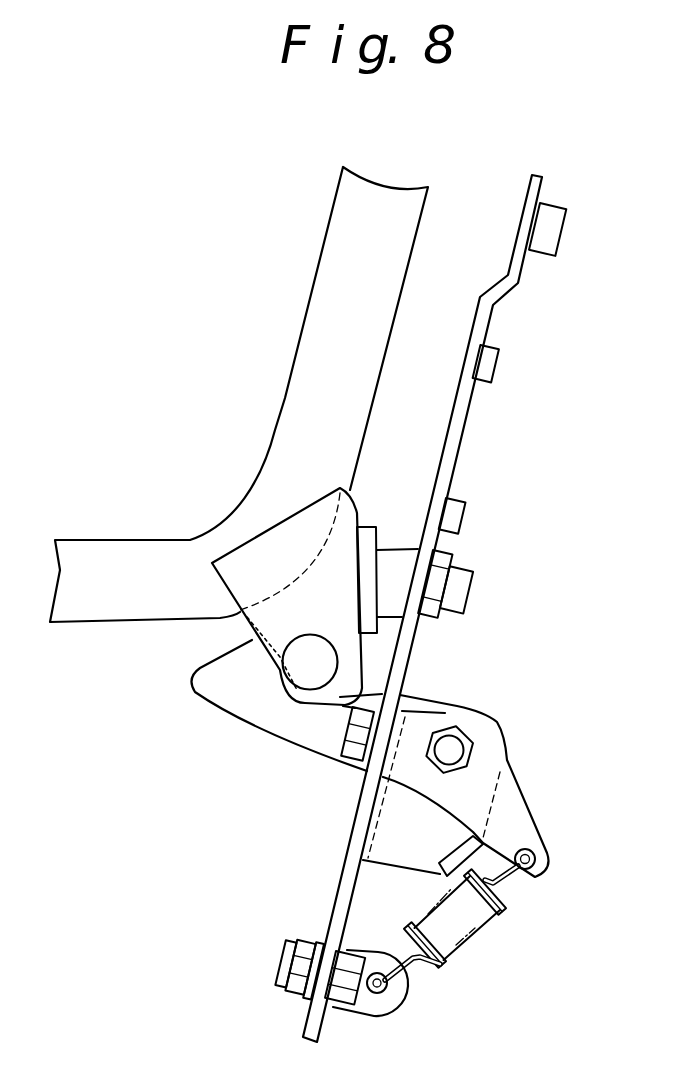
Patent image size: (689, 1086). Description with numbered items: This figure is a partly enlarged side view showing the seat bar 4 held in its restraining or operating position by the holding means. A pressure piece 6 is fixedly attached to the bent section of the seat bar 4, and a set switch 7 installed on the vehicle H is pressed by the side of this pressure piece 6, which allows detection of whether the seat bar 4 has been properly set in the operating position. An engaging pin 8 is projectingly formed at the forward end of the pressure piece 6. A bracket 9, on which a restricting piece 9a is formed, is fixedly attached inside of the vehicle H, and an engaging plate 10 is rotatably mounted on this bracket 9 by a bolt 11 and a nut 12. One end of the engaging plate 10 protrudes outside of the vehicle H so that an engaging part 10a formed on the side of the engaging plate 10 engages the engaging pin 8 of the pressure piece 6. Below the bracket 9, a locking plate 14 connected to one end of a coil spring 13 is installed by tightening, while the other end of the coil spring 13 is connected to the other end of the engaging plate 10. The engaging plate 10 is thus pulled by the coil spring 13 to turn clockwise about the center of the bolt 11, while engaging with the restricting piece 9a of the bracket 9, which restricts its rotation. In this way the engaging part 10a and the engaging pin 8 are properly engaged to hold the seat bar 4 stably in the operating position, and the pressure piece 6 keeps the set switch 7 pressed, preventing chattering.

The seat bar 4 is at (287, 399).
The vehicle H is at (463, 380).
The pressure piece 6 is at (315, 510).
The set switch 7 is at (402, 560).
The engaging pin 8 is at (328, 650).
The engaging part 10a is at (272, 647).
The engaging plate 10 is at (327, 747).
The bracket 9 is at (495, 738).
The nut 12 is at (443, 727).
The bolt 11 is at (453, 763).
The restricting piece 9a is at (453, 853).
The coil spring 13 is at (450, 968).
The locking plate 14 is at (404, 984).